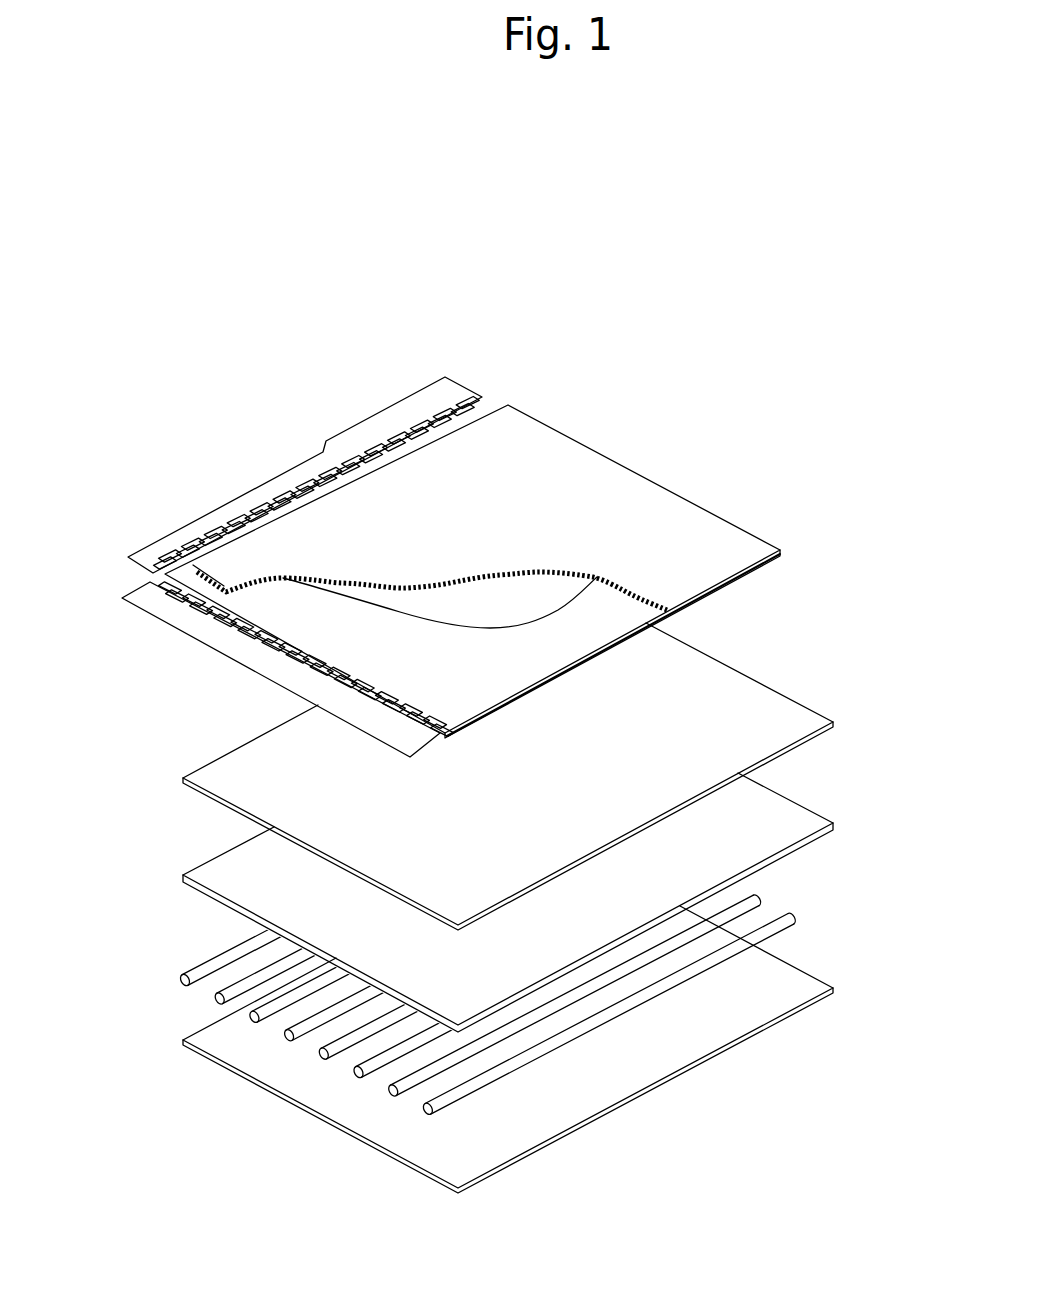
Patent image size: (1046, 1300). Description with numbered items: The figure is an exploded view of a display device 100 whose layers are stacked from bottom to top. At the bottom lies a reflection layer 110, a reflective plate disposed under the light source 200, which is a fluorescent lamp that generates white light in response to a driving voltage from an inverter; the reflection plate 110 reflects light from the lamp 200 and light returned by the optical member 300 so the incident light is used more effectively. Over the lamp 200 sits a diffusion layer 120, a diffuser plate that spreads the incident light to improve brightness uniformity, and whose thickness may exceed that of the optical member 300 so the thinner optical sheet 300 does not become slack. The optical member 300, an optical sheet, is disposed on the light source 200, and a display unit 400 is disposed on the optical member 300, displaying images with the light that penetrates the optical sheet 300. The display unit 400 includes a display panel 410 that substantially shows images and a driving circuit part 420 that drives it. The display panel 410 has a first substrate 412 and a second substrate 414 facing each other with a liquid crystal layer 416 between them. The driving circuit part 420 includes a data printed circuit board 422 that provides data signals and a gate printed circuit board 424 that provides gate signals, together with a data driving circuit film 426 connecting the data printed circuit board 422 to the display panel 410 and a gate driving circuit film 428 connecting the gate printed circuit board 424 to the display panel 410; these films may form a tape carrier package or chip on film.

The display device 100 is at (592, 387).
The reflection layer 110 is at (198, 1024).
The diffusion layer 120 is at (200, 858).
The light source 200 is at (198, 960).
The optical member 300 is at (198, 756).
The display unit 400 is at (172, 517).
The display panel 410 is at (777, 535).
The first substrate 412 is at (542, 662).
The second substrate 414 is at (668, 590).
The liquid crystal layer 416 is at (567, 572).
The driving circuit part 420 is at (120, 588).
The data printed circuit board 422 is at (343, 435).
The gate printed circuit board 424 is at (160, 609).
The data driving circuit film 426 is at (403, 425).
The gate driving circuit film 428 is at (197, 610).